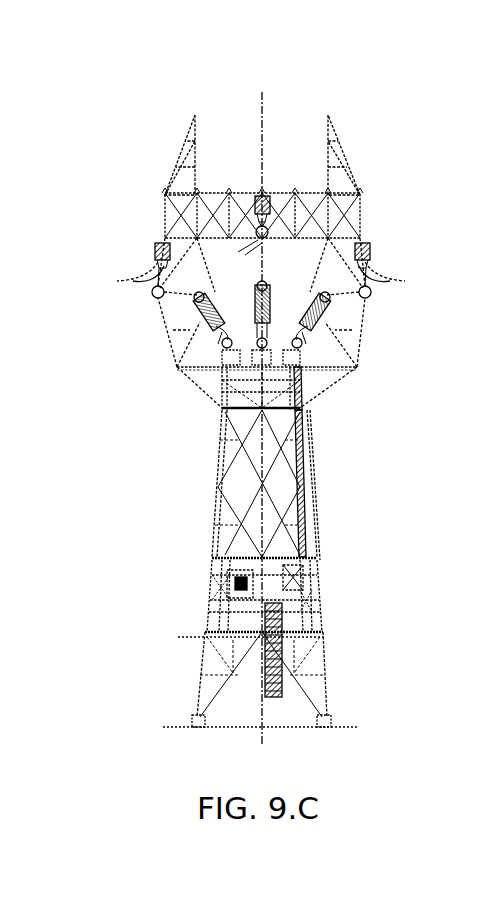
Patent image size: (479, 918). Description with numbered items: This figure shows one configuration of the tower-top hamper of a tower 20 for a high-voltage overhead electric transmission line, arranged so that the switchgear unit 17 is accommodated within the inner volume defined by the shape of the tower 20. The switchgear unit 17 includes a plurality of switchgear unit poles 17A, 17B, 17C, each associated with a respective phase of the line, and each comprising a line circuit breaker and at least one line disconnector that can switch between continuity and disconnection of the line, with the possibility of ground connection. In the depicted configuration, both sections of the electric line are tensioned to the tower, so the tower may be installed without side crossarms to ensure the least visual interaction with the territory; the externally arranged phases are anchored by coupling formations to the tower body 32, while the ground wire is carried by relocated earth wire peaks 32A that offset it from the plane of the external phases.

The earth wire peaks 32A is at (183, 140).
The tower body 32 is at (163, 240).
The switchgear unit pole 17A is at (325, 297).
The switchgear unit pole 17B is at (310, 395).
The switchgear unit pole 17C is at (200, 322).
The switchgear unit 17 is at (214, 357).
The tower 20 is at (278, 532).